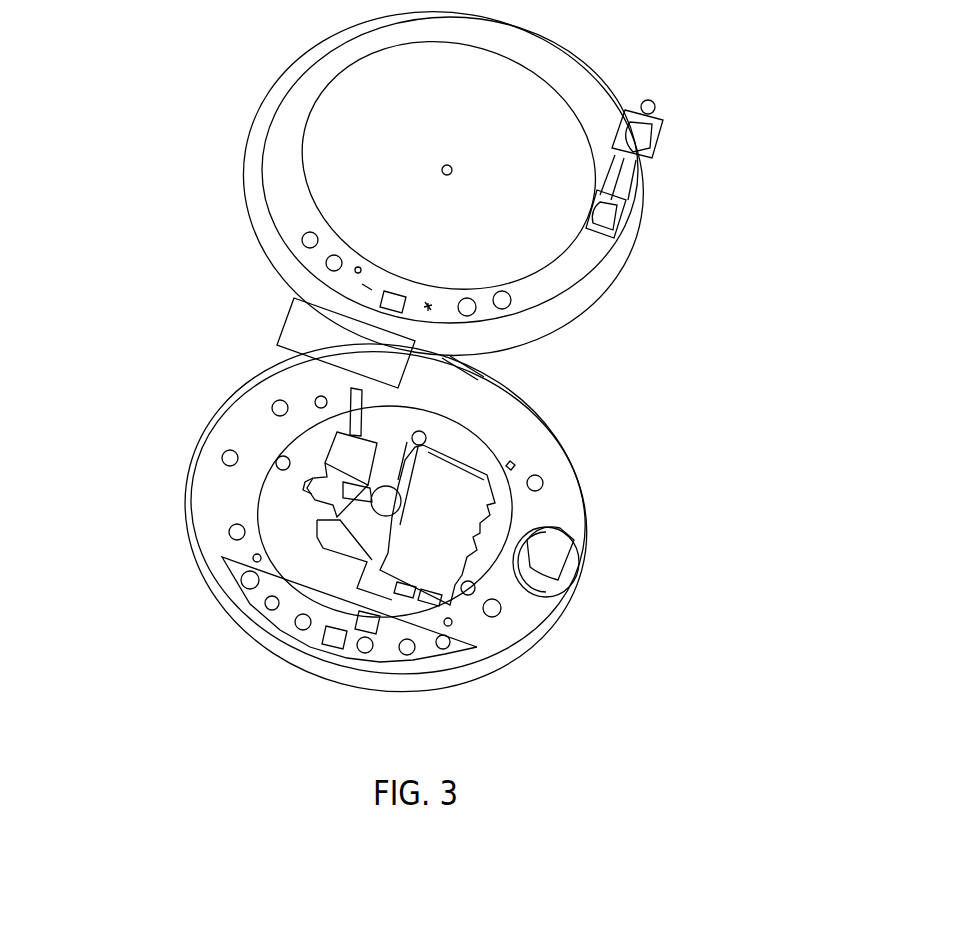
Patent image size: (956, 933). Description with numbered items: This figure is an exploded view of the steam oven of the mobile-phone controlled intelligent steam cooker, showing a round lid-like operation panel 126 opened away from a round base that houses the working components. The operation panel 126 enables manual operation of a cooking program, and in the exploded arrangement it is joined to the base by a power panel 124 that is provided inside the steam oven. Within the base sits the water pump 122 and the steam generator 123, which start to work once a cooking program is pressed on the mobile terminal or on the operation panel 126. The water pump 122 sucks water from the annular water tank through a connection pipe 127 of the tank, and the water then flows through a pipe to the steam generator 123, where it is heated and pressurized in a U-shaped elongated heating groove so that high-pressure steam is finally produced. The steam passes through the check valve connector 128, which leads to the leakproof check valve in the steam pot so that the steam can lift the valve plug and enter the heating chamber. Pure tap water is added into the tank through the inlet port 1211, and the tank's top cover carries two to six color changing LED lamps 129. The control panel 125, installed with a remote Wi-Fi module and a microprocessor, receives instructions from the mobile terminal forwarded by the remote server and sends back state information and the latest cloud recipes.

The water pump 122 is at (342, 462).
The steam generator 123 is at (480, 498).
The power panel 124 is at (303, 322).
The control panel 125 is at (423, 645).
The operation panel 126 is at (527, 288).
The connection pipe 127 is at (350, 392).
The check valve connector 128 is at (372, 501).
The LED lamp 129 is at (516, 461).
The inlet port 1211 is at (550, 552).